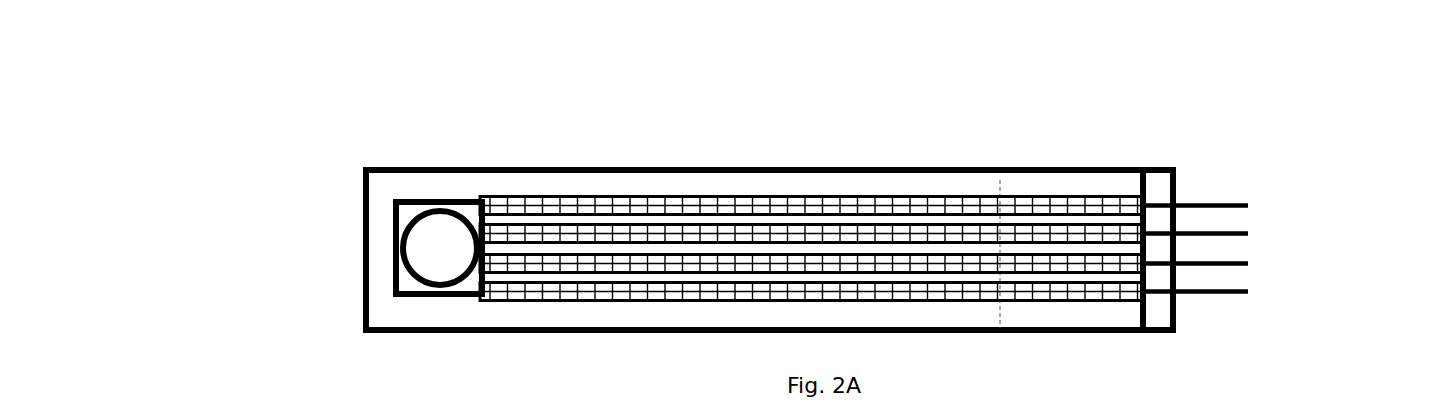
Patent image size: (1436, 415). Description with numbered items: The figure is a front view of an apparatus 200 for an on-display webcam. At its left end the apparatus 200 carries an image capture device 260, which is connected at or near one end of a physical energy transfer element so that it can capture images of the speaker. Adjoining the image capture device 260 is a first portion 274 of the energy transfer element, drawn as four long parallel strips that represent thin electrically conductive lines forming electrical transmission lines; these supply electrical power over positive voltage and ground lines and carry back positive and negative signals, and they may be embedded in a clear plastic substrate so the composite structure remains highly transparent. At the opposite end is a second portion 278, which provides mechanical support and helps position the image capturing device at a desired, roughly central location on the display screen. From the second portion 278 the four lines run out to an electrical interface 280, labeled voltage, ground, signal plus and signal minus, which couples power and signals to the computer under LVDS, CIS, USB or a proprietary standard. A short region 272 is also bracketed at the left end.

The apparatus 200 is at (233, 150).
The image capture device 260 is at (393, 247).
The first portion 272 is at (503, 142).
The first portion of energy transfer element 274 is at (1140, 142).
The second portion of energy transfer device 278 is at (1178, 142).
The electrical interface 280 is at (1323, 178).